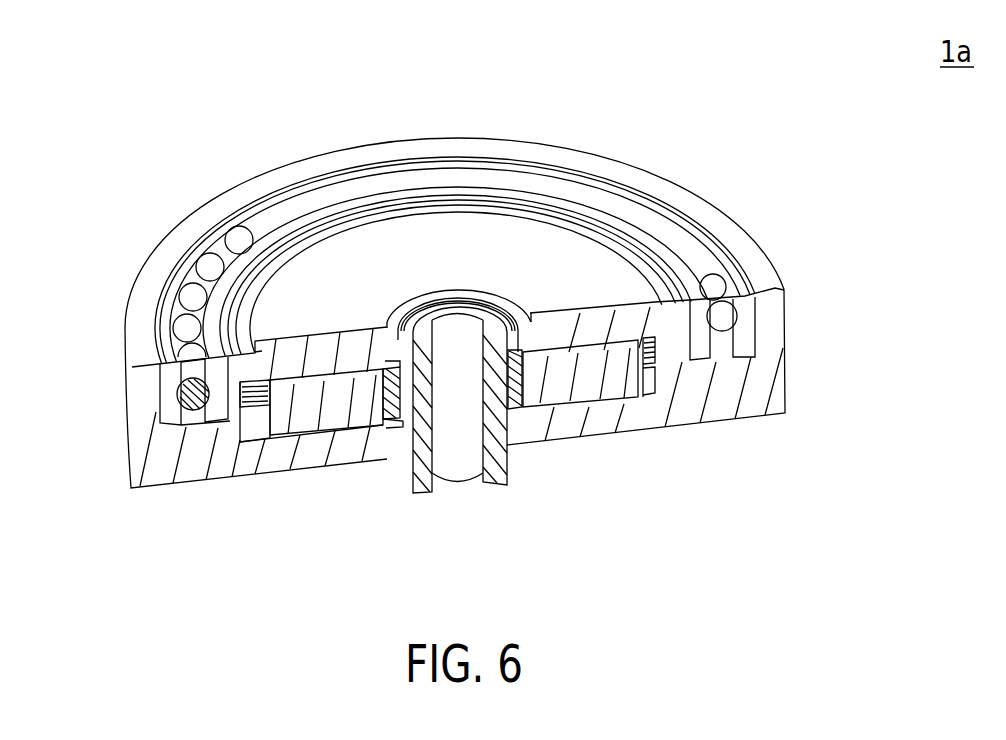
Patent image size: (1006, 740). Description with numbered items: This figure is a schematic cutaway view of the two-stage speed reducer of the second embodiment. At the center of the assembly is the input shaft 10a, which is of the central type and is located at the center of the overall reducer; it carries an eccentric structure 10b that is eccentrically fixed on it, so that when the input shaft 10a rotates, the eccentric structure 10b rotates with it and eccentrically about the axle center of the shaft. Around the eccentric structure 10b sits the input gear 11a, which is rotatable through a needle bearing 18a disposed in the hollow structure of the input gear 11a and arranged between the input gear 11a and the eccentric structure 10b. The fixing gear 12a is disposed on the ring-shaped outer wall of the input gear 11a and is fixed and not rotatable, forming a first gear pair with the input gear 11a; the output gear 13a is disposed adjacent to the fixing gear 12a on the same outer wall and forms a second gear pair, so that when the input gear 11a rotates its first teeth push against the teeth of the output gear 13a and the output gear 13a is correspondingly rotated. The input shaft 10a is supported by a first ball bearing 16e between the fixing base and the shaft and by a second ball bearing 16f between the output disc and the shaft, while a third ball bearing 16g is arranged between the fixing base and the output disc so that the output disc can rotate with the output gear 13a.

The input shaft 10a is at (424, 474).
The eccentric structure 10b is at (407, 406).
The input gear 11a is at (317, 416).
The fixing gear 12a is at (257, 432).
The output gear 13a is at (266, 349).
The first ball bearing 16e is at (529, 432).
The second ball bearing 16f is at (530, 308).
The third ball bearing 16g is at (177, 390).
The needle bearing 18a is at (387, 328).